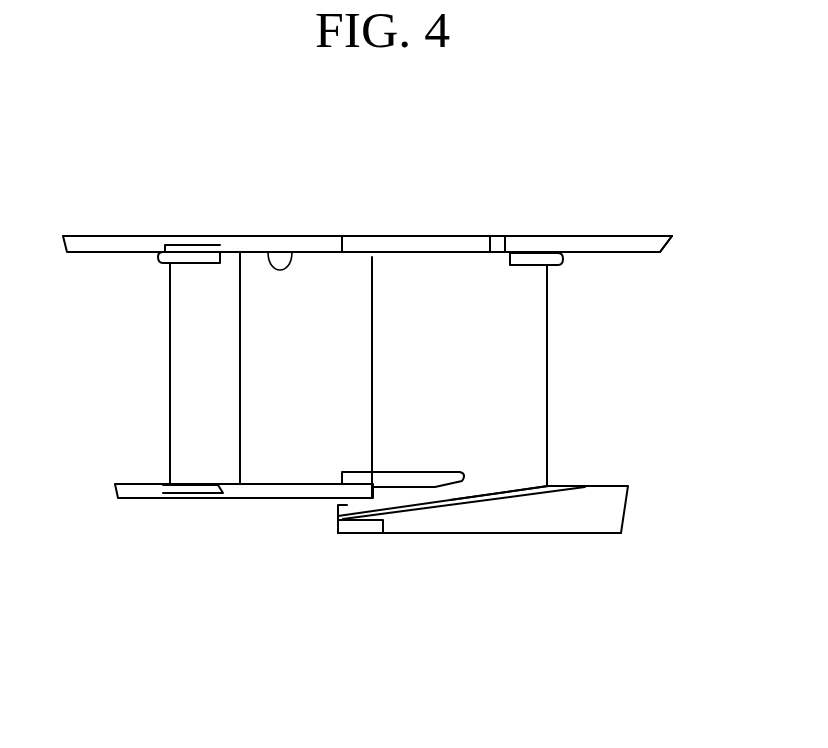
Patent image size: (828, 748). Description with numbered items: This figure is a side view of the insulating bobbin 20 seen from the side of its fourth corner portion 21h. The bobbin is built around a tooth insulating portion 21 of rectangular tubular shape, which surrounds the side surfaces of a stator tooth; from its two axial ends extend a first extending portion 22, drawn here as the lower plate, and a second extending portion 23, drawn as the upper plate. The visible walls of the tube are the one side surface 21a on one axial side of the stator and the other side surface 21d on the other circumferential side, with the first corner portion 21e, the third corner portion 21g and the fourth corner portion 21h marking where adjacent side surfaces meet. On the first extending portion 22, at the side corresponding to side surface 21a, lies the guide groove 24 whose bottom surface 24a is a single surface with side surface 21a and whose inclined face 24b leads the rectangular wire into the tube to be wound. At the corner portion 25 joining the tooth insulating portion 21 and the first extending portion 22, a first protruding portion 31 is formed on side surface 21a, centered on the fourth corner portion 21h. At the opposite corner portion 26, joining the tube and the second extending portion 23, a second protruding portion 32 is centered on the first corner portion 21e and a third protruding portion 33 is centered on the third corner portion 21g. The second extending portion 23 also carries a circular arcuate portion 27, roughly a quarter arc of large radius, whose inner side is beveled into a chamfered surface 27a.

The insulating bobbin 20 is at (451, 232).
The tooth insulating portion 21 is at (548, 325).
The one side surface 21a is at (498, 432).
The other side surface 21d is at (192, 417).
The first corner portion 21e is at (548, 376).
The third corner portion 21g is at (170, 357).
The fourth corner portion 21h is at (372, 298).
The first extending portion 22 is at (626, 512).
The second extending portion 23 is at (110, 236).
The guide groove 24 is at (397, 505).
The bottom surface 24a is at (345, 505).
The wedge inclined surface 24b is at (507, 492).
The corner portion 25 is at (287, 484).
The corner portion 26 is at (272, 236).
The circular arcuate portion 27 is at (652, 238).
The chamfered surface 27a is at (672, 245).
The first protruding portion 31 is at (415, 474).
The second protruding portion 32 is at (557, 260).
The third protruding portion 33 is at (160, 258).